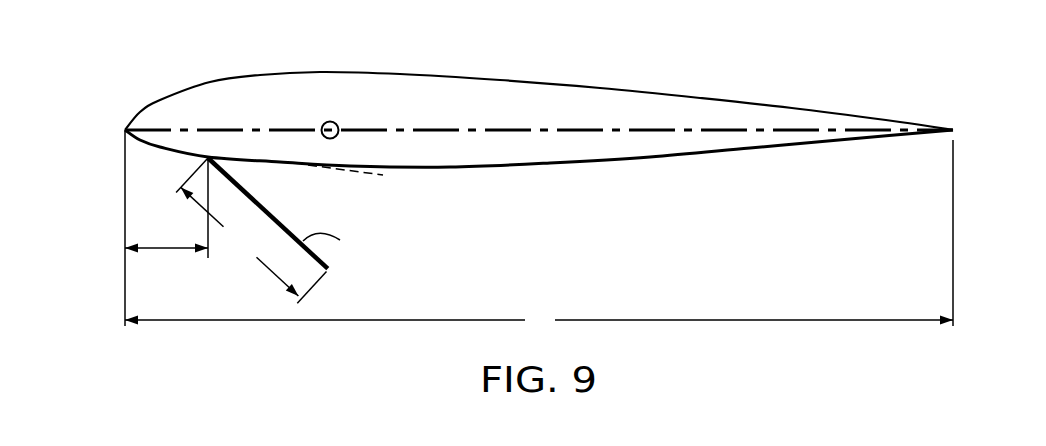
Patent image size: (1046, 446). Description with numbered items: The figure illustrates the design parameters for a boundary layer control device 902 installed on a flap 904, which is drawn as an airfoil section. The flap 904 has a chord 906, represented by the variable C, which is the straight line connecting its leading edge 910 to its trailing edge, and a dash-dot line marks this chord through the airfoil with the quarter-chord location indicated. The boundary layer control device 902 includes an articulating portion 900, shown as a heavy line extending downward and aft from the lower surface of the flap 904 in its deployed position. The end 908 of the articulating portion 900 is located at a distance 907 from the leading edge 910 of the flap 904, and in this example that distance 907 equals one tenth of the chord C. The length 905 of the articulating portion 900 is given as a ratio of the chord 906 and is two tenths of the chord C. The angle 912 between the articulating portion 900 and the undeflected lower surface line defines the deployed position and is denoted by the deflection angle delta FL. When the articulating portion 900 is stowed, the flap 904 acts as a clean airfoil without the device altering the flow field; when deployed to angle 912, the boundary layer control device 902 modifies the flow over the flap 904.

The articulating portion 900 is at (330, 250).
The boundary layer control device 902 is at (138, 175).
The flap 904 is at (668, 92).
The length 905 is at (268, 272).
The chord 906 is at (800, 128).
The distance 907 is at (152, 246).
The end 908 is at (208, 142).
The leading edge 910 is at (128, 127).
The angle 912 is at (359, 180).